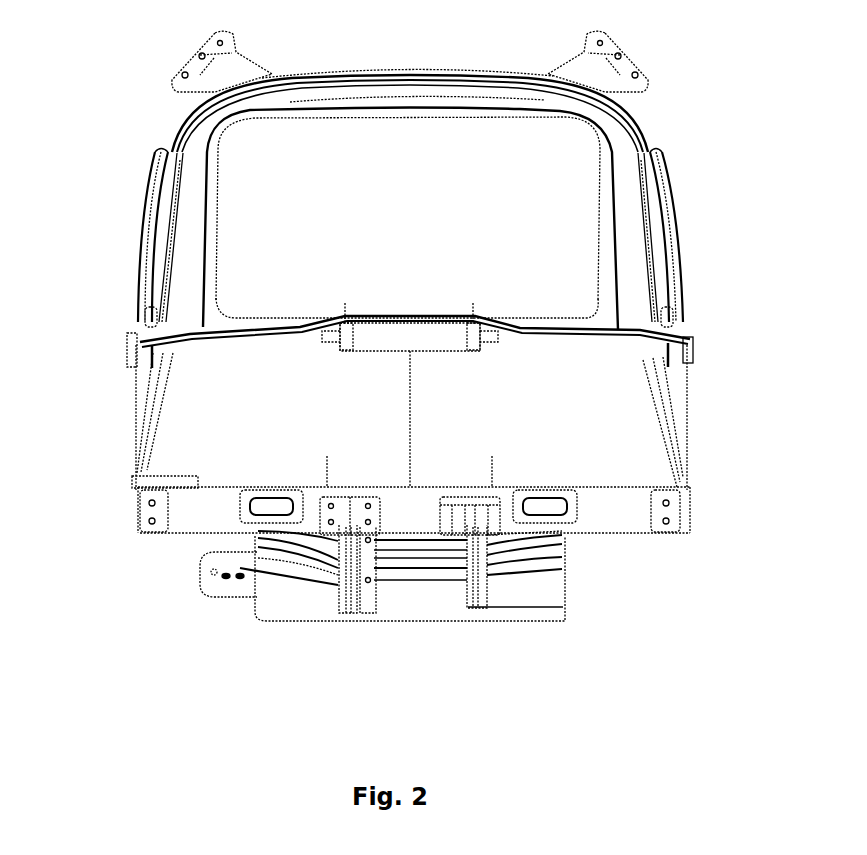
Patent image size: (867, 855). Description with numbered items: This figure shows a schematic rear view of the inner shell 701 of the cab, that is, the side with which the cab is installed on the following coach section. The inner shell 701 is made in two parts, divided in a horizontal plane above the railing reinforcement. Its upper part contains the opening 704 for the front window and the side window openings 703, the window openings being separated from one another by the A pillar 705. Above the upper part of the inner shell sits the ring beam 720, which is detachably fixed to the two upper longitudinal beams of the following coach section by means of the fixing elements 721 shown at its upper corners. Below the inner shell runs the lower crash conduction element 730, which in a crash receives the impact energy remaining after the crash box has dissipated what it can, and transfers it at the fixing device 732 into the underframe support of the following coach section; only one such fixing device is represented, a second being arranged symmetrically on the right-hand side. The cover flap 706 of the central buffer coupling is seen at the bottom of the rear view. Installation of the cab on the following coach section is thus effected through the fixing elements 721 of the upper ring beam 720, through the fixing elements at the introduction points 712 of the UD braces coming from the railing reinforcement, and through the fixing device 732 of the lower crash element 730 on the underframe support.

The inner shell 701 is at (172, 132).
The side window opening 703 is at (143, 233).
The front window opening 704 is at (582, 202).
The A pillar 705 is at (188, 216).
The cover flap of the central buffer coupling 706 is at (262, 614).
The introduction points of the UD braces 712 is at (152, 512).
The ring beam 720 is at (410, 64).
The fixing device 721 is at (192, 64).
The lower crash conduction element 730 is at (370, 591).
The fixing device of the lower crash element on the underframe support 732 is at (340, 513).